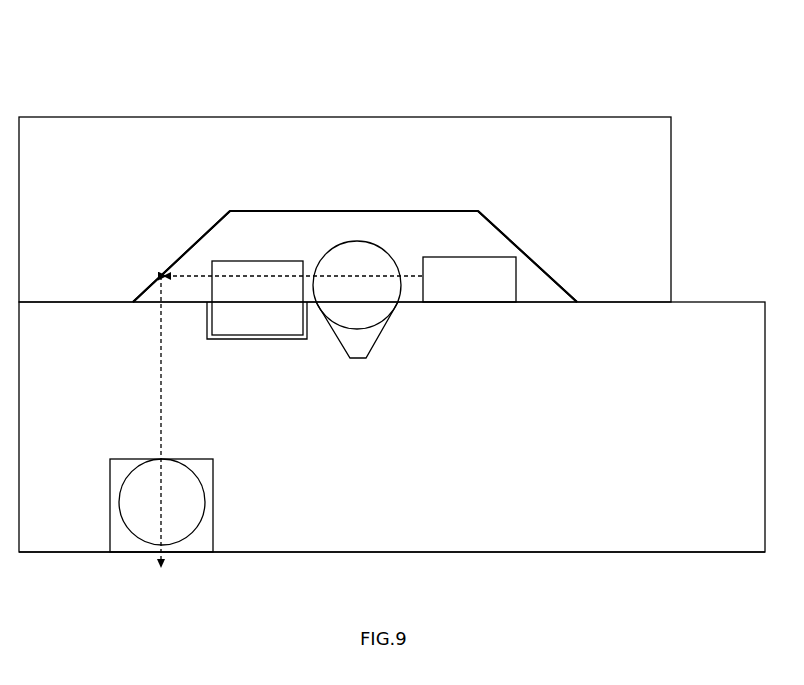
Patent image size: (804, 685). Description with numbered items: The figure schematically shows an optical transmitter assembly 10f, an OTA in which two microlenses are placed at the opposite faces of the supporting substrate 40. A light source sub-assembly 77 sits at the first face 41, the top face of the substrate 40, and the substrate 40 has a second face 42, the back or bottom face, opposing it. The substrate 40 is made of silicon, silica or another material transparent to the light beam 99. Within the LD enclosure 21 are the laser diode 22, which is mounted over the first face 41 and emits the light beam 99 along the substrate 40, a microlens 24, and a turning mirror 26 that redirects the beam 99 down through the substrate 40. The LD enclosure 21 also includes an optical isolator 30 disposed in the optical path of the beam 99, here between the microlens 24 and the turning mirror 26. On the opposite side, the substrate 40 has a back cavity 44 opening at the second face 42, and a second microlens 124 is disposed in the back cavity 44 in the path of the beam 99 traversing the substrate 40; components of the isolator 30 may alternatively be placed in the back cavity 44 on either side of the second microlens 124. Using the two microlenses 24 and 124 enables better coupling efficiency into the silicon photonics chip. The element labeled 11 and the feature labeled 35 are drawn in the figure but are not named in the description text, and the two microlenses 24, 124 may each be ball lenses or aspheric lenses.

The optical transmitter assembly 10f is at (236, 88).
The housing 11 is at (345, 209).
The LD enclosure 21 is at (431, 222).
The laser diode 22 is at (469, 279).
The microlens 24 is at (360, 242).
The turning mirror 26 is at (197, 241).
The optical isolator 30 is at (249, 339).
The tapered portion 35 is at (372, 333).
The supporting substrate 40 is at (392, 427).
The first face 41 is at (540, 308).
The second face 42 is at (608, 548).
The back cavity 44 is at (216, 503).
The light source sub-assembly 77 is at (433, 212).
The light beam 99 is at (381, 276).
The second microlens 124 is at (123, 487).